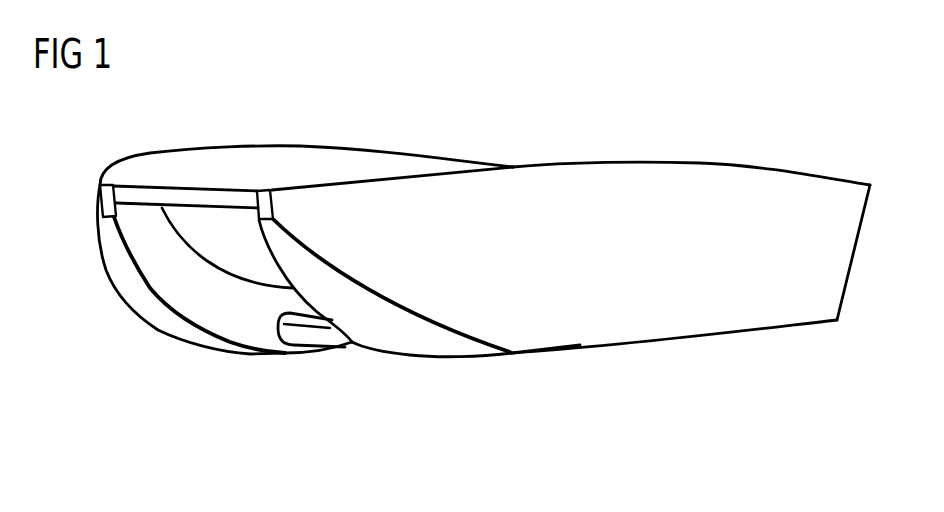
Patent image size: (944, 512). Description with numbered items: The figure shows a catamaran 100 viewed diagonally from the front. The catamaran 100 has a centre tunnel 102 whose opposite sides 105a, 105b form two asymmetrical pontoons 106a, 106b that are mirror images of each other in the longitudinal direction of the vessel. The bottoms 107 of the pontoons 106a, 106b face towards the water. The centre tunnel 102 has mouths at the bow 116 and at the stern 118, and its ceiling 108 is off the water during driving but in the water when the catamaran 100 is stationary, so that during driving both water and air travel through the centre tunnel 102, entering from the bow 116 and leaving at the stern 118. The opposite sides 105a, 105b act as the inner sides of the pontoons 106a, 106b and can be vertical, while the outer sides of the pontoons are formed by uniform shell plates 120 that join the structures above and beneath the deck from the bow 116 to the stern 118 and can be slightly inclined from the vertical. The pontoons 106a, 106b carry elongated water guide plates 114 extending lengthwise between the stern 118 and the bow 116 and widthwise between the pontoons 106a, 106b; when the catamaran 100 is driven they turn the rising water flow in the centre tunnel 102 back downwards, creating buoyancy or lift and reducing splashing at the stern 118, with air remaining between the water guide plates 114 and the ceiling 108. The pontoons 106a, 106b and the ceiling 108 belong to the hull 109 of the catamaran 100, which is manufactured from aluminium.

The catamaran 100 is at (702, 413).
The centre tunnel 102 is at (256, 314).
The first opposite side of the centre tunnel 105a is at (265, 281).
The second opposite side of the centre tunnel 105b is at (371, 351).
The first asymmetrical pontoon 106a is at (123, 273).
The second asymmetrical pontoon 106b is at (391, 285).
The bottoms of the pontoons 107 is at (113, 252).
The ceiling of the centre tunnel 108 is at (203, 237).
The hull 109 is at (546, 394).
The water guide plates 114 is at (338, 344).
The bow 116 is at (143, 145).
The stern 118 is at (846, 164).
The shell plates 120 is at (571, 206).